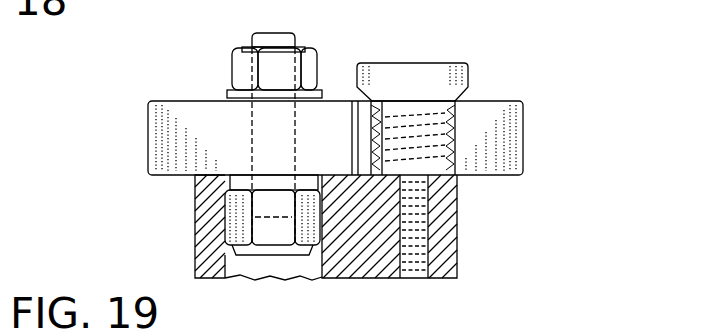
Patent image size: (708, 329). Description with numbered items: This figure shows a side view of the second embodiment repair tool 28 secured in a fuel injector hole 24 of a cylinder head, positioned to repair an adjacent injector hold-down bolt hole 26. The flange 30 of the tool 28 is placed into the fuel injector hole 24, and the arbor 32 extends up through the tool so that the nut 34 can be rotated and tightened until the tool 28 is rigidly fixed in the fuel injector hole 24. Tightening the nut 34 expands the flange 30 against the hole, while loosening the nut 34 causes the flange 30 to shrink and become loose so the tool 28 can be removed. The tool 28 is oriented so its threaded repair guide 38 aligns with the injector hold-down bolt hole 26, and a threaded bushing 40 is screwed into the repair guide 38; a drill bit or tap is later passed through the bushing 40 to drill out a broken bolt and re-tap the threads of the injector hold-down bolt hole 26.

The fuel injector hole 24 is at (217, 268).
The injector hold-down bolt hole 26 is at (454, 278).
The tool 28 is at (528, 82).
The flange 30 is at (226, 217).
The arbor 32 is at (268, 33).
The nut 34 is at (322, 60).
The repair guide 38 is at (440, 162).
The bushing 40 is at (421, 63).